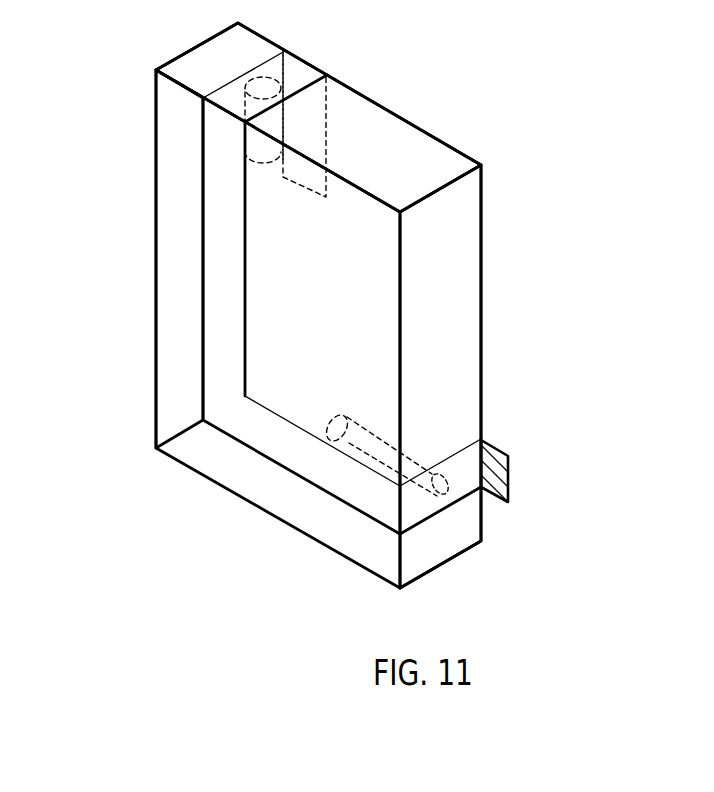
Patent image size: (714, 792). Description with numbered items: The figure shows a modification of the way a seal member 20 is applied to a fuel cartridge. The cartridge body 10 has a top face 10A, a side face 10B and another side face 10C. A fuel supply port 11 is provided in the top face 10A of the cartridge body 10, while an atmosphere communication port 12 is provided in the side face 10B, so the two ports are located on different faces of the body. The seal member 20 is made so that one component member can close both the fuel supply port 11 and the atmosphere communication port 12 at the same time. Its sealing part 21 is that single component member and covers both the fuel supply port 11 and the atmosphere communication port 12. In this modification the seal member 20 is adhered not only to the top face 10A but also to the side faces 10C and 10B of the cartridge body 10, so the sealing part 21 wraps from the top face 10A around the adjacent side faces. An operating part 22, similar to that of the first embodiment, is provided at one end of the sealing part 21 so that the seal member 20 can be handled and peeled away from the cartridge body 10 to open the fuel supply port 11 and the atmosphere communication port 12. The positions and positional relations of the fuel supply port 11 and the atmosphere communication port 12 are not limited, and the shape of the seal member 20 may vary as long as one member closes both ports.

The cartridge body 10 is at (470, 233).
The top face 10A is at (437, 140).
The side face 10B is at (470, 297).
The side face 10C is at (175, 280).
The fuel supply port 11 is at (257, 78).
The atmosphere communication port 12 is at (447, 498).
The seal member 20 is at (471, 448).
The sealing part 21 is at (332, 468).
The operating part 22 is at (524, 471).